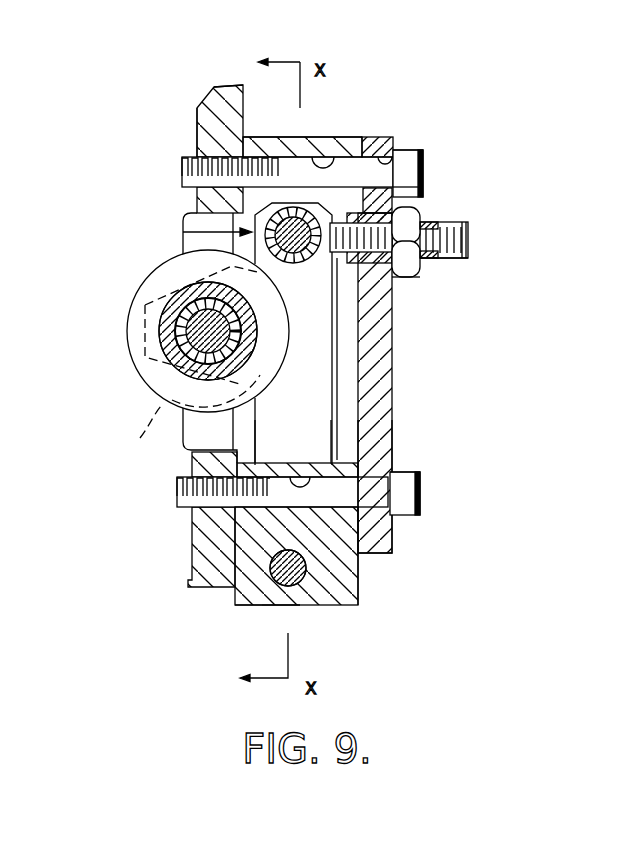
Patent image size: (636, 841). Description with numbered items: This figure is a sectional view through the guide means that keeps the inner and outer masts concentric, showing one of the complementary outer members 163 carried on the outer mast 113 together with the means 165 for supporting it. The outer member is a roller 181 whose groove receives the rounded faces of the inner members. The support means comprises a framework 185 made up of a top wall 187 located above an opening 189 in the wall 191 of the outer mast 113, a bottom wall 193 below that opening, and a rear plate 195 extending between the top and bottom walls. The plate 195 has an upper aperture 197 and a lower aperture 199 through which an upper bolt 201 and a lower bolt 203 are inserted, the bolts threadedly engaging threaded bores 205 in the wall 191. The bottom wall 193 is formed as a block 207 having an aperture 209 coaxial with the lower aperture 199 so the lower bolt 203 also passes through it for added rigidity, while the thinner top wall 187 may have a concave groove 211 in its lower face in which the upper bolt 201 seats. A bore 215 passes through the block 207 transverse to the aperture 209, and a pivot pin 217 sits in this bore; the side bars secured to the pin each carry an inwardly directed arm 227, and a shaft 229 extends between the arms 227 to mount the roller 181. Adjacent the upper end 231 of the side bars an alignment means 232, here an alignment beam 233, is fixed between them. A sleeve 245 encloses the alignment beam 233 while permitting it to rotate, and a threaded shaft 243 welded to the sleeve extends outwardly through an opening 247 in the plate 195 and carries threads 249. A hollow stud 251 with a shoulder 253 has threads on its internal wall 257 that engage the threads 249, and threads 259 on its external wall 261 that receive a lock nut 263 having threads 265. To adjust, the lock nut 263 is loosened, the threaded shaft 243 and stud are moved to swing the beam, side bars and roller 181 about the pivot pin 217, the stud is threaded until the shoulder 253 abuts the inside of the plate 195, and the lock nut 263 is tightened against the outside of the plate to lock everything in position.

The outer mast 113 is at (205, 83).
The outer members 163 is at (118, 157).
The means for supporting the outer members 165 is at (351, 94).
The roller 181 is at (137, 350).
The framework 185 is at (406, 575).
The top wall 187 is at (287, 137).
The opening 189 is at (148, 244).
The wall of the outer mast 191 is at (197, 112).
The bottom wall 193 is at (350, 583).
The rear wall or plate 195 is at (392, 447).
The upper aperture 197 is at (423, 158).
The lower aperture 199 is at (420, 505).
The upper bolt 201 is at (410, 148).
The lower bolt 203 is at (405, 463).
The threaded bores 205 is at (197, 195).
The block 207 is at (262, 606).
The aperture 209 is at (300, 462).
The concave groove 211 is at (350, 137).
The bore 215 is at (313, 603).
The pivot pin 217 is at (243, 600).
The arm 227 is at (140, 438).
The shaft 229 is at (145, 322).
The upper end of the side bars 231 is at (337, 205).
The alignment means 232 is at (183, 232).
The alignment beam 233 is at (290, 265).
The threaded shaft 243 is at (392, 408).
The sleeve 245 is at (250, 266).
The opening 247 is at (412, 268).
The threads 249 is at (470, 240).
The hollow stud 251 is at (445, 262).
The shoulder 253 is at (340, 400).
The internal wall 257 is at (450, 222).
The threads 259 is at (430, 275).
The external wall 261 is at (405, 280).
The lock nut 263 is at (425, 212).
The threads 265 is at (468, 250).